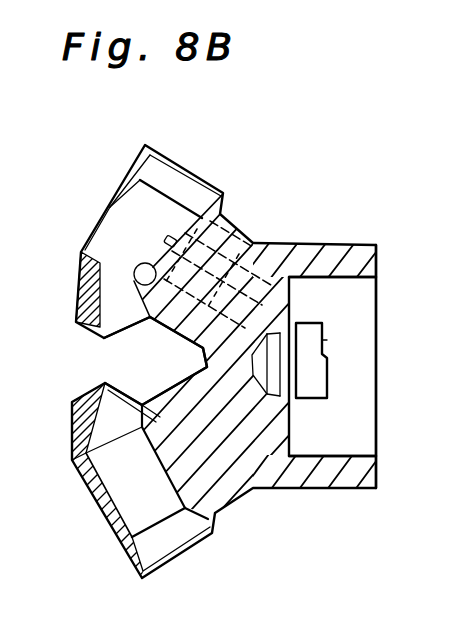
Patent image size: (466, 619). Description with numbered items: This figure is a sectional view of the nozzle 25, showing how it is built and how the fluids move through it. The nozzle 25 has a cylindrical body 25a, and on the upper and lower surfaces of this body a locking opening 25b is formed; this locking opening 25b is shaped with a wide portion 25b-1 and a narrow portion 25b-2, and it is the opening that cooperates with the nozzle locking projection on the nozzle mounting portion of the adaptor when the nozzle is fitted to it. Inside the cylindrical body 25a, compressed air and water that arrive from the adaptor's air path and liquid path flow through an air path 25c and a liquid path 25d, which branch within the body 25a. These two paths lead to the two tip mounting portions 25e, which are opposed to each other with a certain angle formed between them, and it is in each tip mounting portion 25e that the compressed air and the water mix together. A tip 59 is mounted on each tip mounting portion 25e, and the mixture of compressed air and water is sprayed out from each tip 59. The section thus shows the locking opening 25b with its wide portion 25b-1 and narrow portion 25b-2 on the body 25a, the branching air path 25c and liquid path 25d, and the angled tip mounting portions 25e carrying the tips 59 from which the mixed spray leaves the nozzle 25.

The nozzle 25 is at (338, 229).
The cylindrical body 25a is at (336, 483).
The locking opening 25b is at (329, 343).
The wide portion 25b-1 is at (310, 380).
The narrow portion 25b-2 is at (326, 342).
The air path 25c is at (251, 247).
The liquid path 25d is at (172, 330).
The tip mounting portion 25e is at (140, 218).
The tip 59 is at (88, 267).